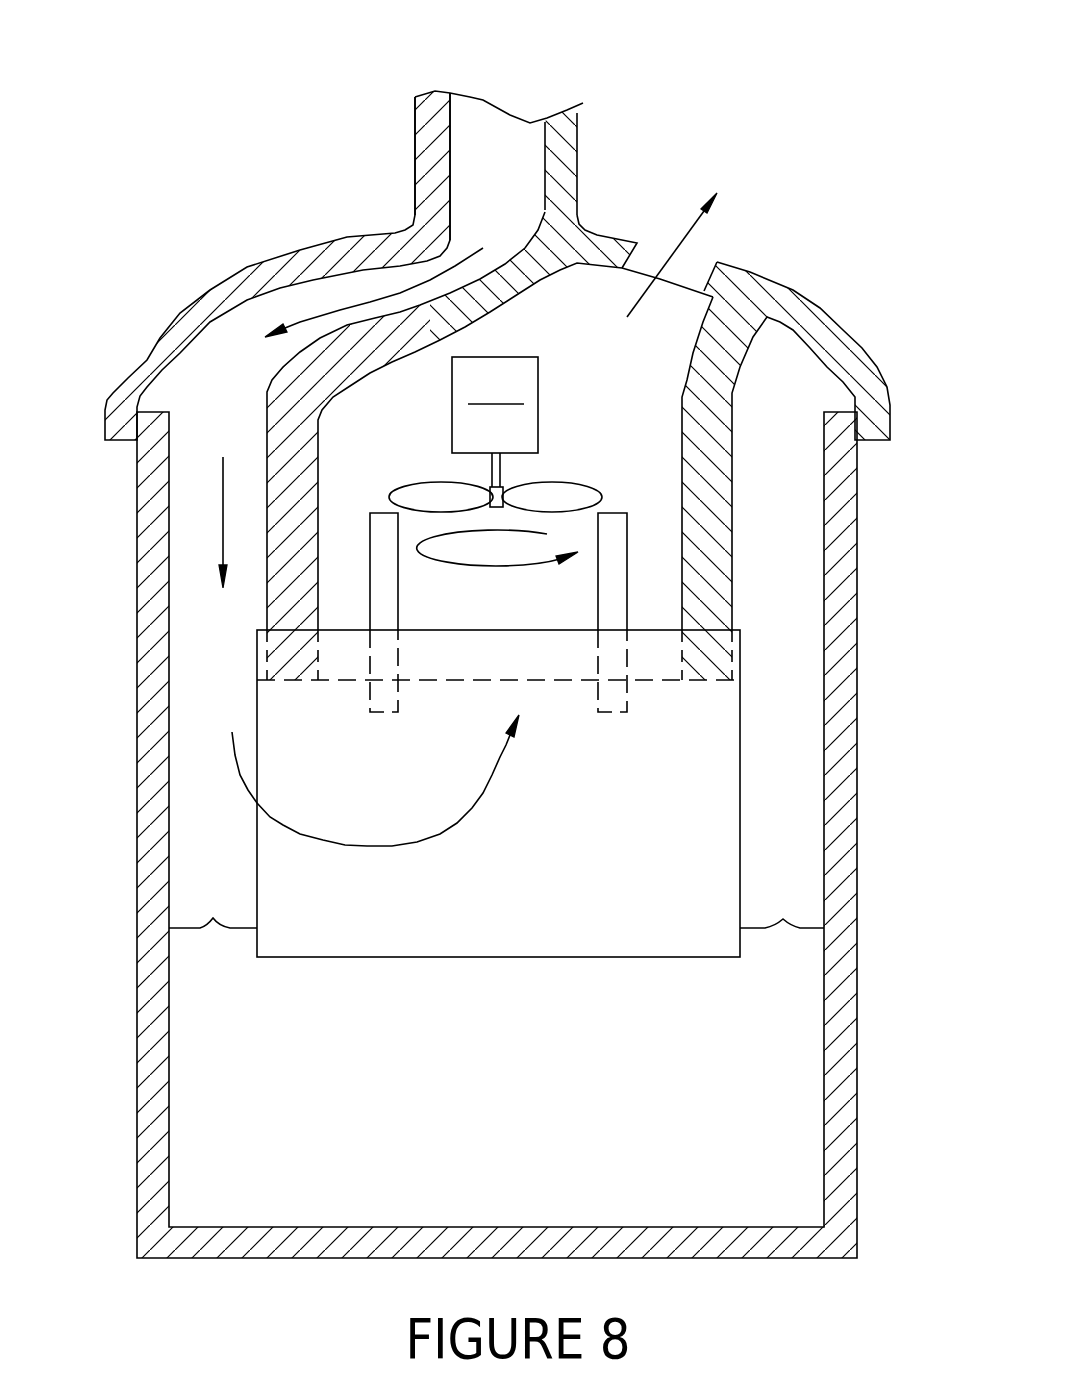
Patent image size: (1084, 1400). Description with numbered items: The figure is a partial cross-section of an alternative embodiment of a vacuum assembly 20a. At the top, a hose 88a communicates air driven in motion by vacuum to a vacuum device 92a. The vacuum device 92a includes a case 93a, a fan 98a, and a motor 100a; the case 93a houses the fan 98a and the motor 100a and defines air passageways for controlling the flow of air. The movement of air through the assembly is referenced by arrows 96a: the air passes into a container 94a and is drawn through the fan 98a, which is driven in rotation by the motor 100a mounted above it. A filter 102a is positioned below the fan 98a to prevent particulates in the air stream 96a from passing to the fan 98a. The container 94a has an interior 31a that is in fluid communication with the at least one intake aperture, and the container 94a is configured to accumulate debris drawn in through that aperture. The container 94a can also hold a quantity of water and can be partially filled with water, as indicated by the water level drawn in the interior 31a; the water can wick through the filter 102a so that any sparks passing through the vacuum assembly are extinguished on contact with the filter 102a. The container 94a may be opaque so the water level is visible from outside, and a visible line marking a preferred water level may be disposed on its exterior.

The vacuum assembly 20a is at (168, 85).
The hose 88a is at (430, 132).
The vacuum device 92a is at (247, 182).
The case 93a is at (250, 275).
The arrows 96a is at (313, 317).
The interior 31a is at (193, 662).
The container 94a is at (135, 1155).
The fan 98a is at (560, 492).
The motor 100a is at (495, 422).
The filter 102a is at (722, 770).